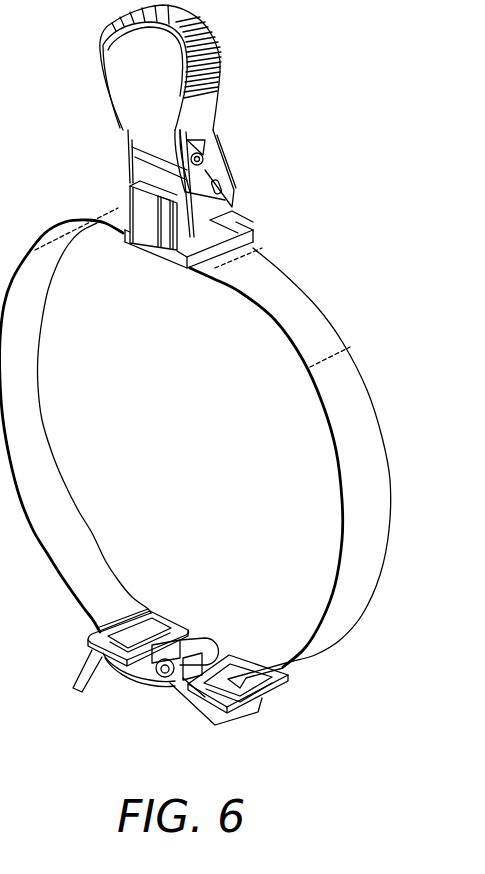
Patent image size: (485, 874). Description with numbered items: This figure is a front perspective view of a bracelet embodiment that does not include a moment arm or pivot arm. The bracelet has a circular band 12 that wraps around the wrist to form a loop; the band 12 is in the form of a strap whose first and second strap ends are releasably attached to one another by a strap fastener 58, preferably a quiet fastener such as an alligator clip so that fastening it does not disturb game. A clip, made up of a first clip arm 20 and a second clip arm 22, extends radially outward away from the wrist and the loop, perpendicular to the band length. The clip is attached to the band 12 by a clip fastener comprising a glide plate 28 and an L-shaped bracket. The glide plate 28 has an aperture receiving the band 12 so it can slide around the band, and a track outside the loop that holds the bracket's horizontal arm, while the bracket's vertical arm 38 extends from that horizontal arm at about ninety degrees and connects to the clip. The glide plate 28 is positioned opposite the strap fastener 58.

The circular band 12 is at (267, 280).
The first clip arm 20 is at (118, 78).
The second clip arm 22 is at (218, 68).
The glide plate 28 is at (250, 229).
The vertical arm 38 is at (148, 205).
The strap fastener 58 is at (154, 696).